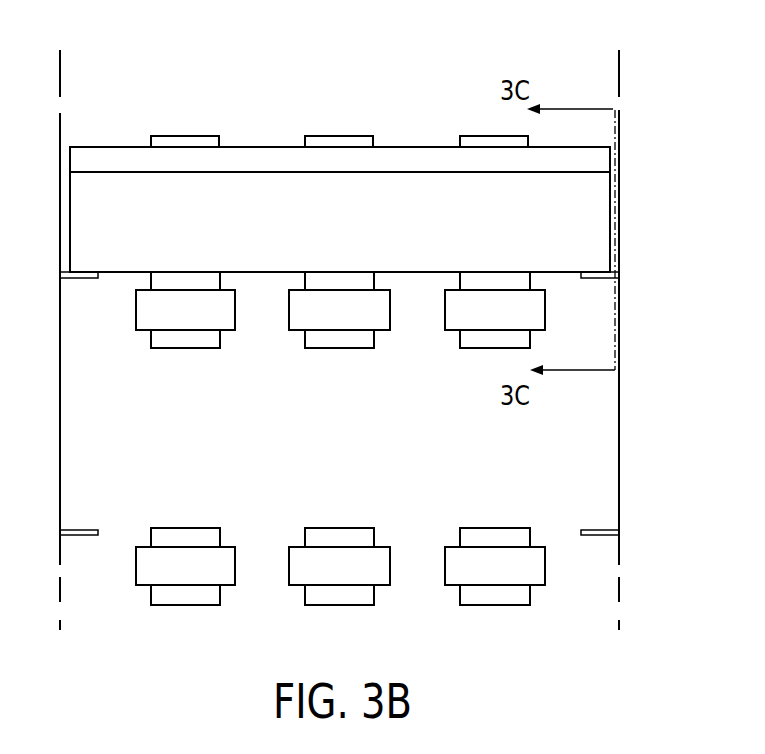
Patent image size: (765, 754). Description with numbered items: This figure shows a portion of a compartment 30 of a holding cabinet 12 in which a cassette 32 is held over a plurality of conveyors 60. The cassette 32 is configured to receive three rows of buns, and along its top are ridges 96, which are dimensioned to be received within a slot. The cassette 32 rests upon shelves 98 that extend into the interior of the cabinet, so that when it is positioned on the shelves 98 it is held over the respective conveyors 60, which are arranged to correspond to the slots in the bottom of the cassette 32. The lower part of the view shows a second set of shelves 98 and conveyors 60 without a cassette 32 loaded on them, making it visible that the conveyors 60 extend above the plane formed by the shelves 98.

The compartment 30 is at (121, 98).
The holding cabinet 12 is at (620, 158).
The cassette 32 is at (583, 223).
The ridges 96 is at (323, 140).
The conveyors 60 is at (228, 300).
The shelves 98 is at (83, 279).